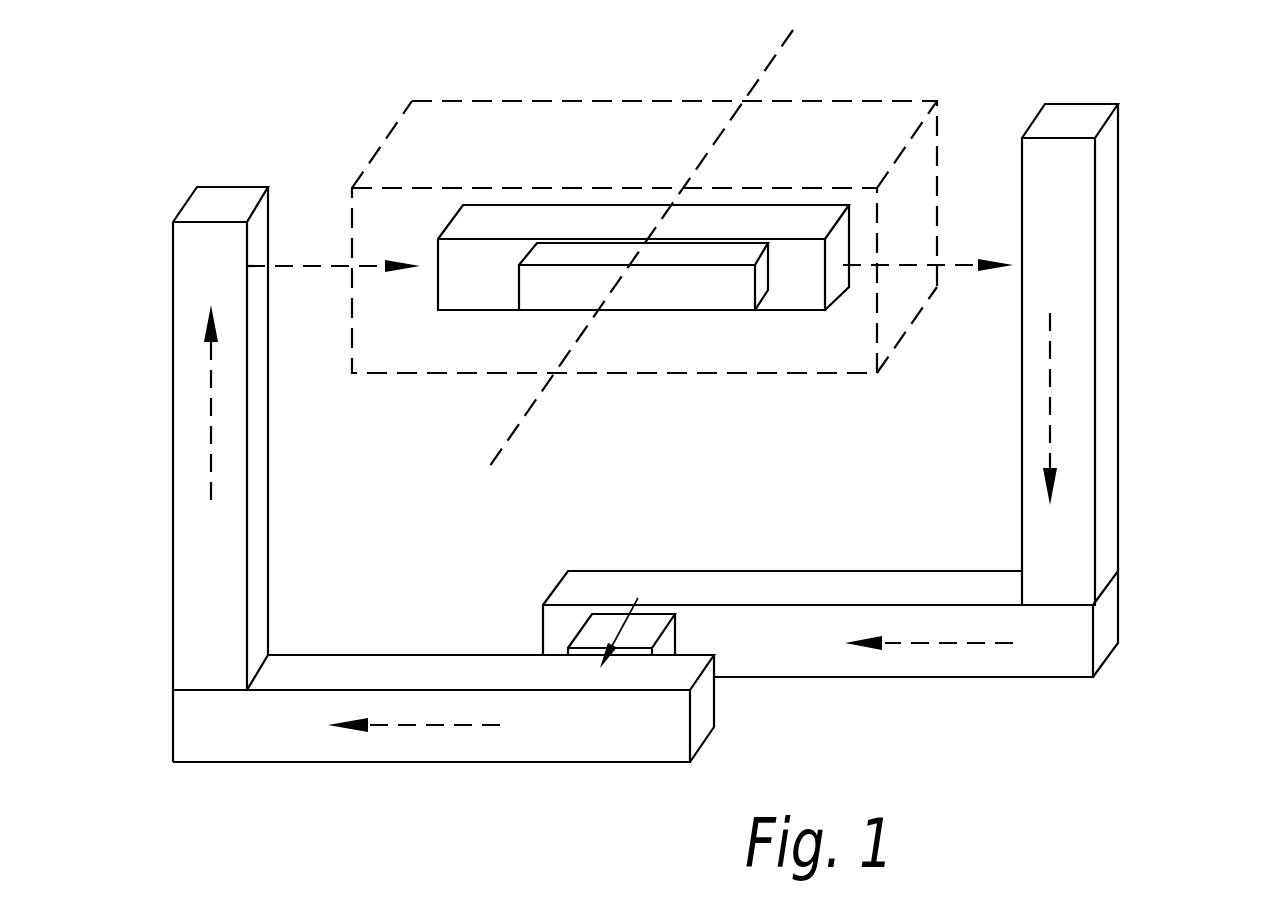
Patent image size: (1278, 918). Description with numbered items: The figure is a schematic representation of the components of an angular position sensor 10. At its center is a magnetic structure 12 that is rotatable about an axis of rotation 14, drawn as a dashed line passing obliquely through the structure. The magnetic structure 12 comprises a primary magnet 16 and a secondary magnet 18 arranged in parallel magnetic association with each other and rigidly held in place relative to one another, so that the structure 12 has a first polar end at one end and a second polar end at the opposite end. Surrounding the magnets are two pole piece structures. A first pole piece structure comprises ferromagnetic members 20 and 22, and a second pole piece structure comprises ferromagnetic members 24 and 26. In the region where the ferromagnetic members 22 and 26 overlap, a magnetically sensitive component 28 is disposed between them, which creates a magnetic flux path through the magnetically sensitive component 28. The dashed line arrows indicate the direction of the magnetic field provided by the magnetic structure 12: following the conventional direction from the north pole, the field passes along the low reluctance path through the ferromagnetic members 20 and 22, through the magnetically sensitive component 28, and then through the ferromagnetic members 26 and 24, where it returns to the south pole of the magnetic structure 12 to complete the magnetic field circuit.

The angular position sensor 10 is at (288, 137).
The magnetic structure 12 is at (407, 375).
The axis of rotation 14 is at (515, 435).
The primary magnet 16 is at (492, 217).
The secondary magnet 18 is at (687, 292).
The ferromagnetic member 20 is at (1080, 172).
The ferromagnetic member 22 is at (970, 658).
The ferromagnetic member 24 is at (200, 253).
The ferromagnetic member 26 is at (288, 748).
The magnetically sensitive component 28 is at (593, 628).